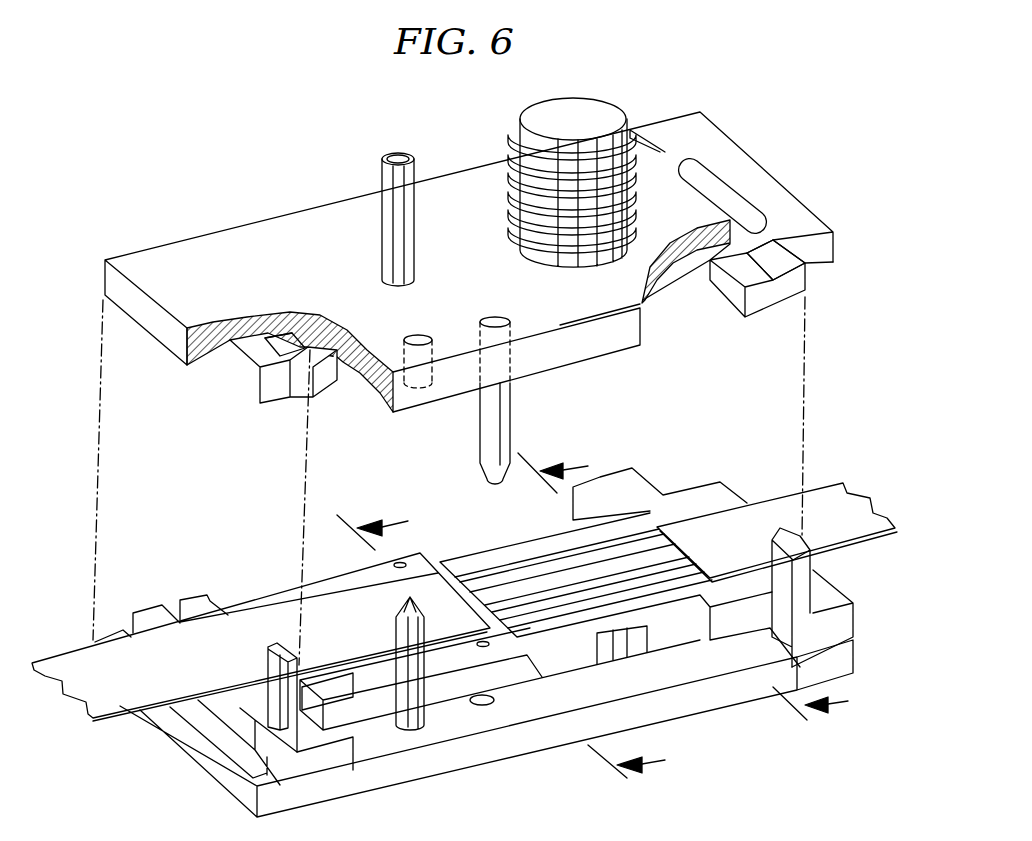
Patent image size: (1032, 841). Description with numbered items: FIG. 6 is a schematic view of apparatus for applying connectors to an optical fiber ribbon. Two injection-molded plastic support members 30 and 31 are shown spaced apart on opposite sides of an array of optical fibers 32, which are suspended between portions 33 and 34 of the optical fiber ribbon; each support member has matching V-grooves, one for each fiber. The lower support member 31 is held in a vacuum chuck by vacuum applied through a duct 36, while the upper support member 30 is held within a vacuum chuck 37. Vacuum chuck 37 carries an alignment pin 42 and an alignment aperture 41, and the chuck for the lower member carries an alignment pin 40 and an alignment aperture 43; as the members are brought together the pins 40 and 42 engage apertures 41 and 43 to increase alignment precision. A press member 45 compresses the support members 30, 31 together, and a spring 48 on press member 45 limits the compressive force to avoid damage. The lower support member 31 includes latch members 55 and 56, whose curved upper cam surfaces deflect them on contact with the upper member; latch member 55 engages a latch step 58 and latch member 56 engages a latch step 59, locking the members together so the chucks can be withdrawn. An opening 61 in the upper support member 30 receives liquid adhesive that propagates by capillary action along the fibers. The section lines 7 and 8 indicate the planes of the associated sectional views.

The upper optical fiber support member 30 is at (469, 262).
The lower optical fiber support member 31 is at (658, 645).
The optical fibers 32 is at (637, 537).
The optical fiber ribbon portion 33 is at (78, 657).
The optical fiber ribbon portion 34 is at (774, 507).
The duct 36 is at (382, 171).
The vacuum chuck 37 is at (742, 702).
The alignment pin 40 is at (481, 427).
The alignment aperture 41 is at (478, 698).
The alignment pin 42 is at (400, 631).
The alignment aperture 43 is at (420, 336).
The press member 45 is at (603, 100).
The spring 48 is at (508, 208).
The latch member 55 is at (266, 658).
The latch member 56 is at (817, 562).
The latch step 58 is at (303, 345).
The latch step 59 is at (773, 252).
The opening 61 is at (697, 170).
The section line 7- 7 is at (693, 583).
The section line 8- 8 is at (514, 640).